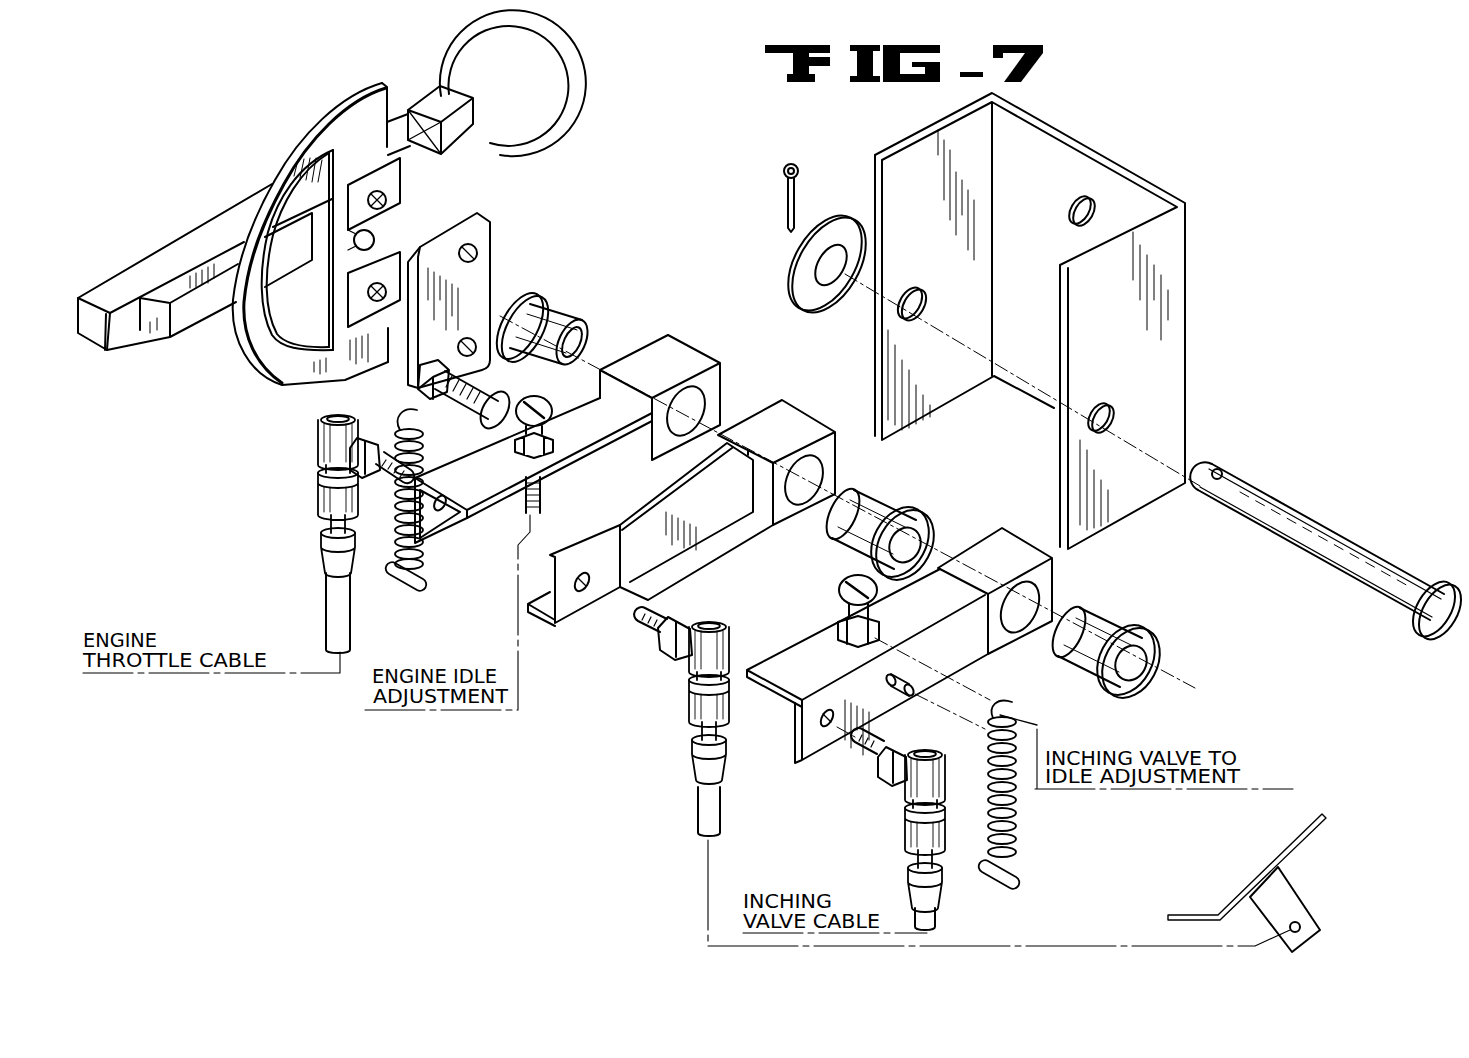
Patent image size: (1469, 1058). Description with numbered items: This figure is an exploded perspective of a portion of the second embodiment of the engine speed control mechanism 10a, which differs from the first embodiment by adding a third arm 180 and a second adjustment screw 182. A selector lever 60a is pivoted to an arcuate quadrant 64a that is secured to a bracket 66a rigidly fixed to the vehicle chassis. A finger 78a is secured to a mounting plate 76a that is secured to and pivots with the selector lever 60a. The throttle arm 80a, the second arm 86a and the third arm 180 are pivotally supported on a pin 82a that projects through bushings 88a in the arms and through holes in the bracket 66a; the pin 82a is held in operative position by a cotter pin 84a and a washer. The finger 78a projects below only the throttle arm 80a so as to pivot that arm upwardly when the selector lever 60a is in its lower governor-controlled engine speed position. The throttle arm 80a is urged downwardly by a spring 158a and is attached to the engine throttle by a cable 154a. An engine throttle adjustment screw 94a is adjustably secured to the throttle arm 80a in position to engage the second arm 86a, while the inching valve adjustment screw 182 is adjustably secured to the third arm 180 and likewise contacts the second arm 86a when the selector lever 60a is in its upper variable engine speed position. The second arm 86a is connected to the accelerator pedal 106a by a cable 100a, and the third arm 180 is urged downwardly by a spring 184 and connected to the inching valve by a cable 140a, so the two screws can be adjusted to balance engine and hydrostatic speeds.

The engine speed control mechanism 10a is at (261, 88).
The selector lever 60a is at (417, 166).
The arcuate quadrant 64a is at (284, 160).
The mounting plate 76a is at (489, 220).
The finger 78a is at (425, 390).
The engine throttle adjustment screw 94a is at (530, 398).
The throttle arm 80a is at (593, 428).
The second arm 86a is at (587, 537).
The bushings 88a is at (547, 306).
The cable 154a is at (330, 520).
The spring 158a is at (425, 553).
The bracket 66a is at (1105, 154).
The cotter pin 84a is at (784, 177).
The pin 82a is at (1243, 477).
The third arm 180 is at (810, 642).
The inching valve adjustment screw 182 is at (838, 588).
The cable 100a is at (695, 733).
The cable 140a is at (912, 855).
The spring 184 is at (1020, 808).
The accelerator pedal 106a is at (1293, 838).